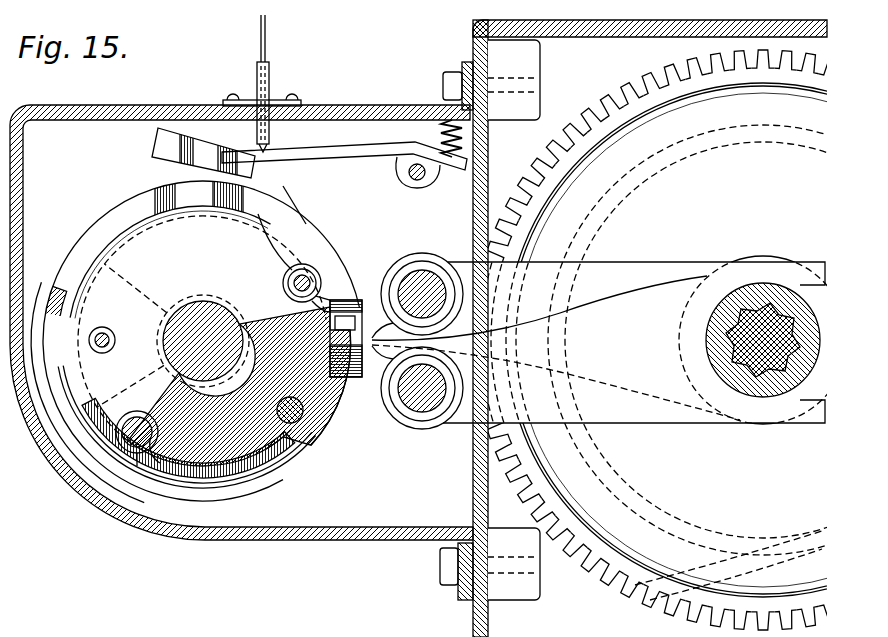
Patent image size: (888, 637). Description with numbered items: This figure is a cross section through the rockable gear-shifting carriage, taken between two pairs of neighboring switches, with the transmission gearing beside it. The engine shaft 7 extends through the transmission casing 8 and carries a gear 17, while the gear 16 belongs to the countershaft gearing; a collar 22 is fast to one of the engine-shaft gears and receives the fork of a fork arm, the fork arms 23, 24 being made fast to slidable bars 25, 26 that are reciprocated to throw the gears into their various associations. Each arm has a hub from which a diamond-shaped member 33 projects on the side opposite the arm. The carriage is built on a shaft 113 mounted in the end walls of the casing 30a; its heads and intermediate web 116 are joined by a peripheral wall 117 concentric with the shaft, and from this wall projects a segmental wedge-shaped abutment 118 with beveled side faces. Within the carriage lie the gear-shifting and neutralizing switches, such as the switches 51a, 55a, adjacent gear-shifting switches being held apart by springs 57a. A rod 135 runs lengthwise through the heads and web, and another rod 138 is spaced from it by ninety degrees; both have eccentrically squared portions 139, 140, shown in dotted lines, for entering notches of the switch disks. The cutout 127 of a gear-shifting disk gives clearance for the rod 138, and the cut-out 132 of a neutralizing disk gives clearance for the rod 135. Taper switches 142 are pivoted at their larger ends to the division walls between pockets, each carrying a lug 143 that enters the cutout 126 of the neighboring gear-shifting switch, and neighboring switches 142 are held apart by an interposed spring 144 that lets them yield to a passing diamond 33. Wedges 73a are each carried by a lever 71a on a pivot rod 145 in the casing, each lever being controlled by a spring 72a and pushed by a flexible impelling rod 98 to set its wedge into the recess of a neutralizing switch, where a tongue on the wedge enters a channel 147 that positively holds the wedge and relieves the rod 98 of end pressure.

The engine shaft 7 is at (753, 402).
The transmission casing 8 is at (473, 620).
The gear 16 is at (340, 238).
The gear 17 is at (581, 562).
The collar 22 is at (771, 428).
The fork arm 23 is at (556, 348).
The fork arm 24 is at (634, 342).
The slidable bar 25 is at (427, 412).
The slidable bar 26 is at (428, 282).
The casing 30a is at (363, 542).
The diamond member 33 is at (343, 328).
The disc 51a is at (202, 328).
The ring 55a is at (190, 196).
The spring 57a is at (101, 328).
The lever 71a is at (335, 158).
The spring 72a is at (465, 140).
The wedge 73a is at (163, 149).
The flexible rod 98 is at (267, 43).
The shaft 113 is at (203, 322).
The intermediate web 116 is at (223, 490).
The peripheral wall 117 is at (318, 449).
The segmental wedge-shaped abutment 118 is at (187, 402).
The cutout 126 is at (288, 284).
The cutout 127 is at (126, 412).
The cut-out portion 132 is at (345, 394).
The rod 135 is at (305, 414).
The rod 138 is at (143, 447).
The eccentrically squared portion 139 is at (128, 419).
The eccentrically squared portion 140 is at (236, 486).
The taper switch 142 is at (292, 222).
The lug 143 is at (306, 269).
The spring 144 is at (290, 270).
The pivot rod 145 is at (423, 181).
The channel 147 is at (73, 451).